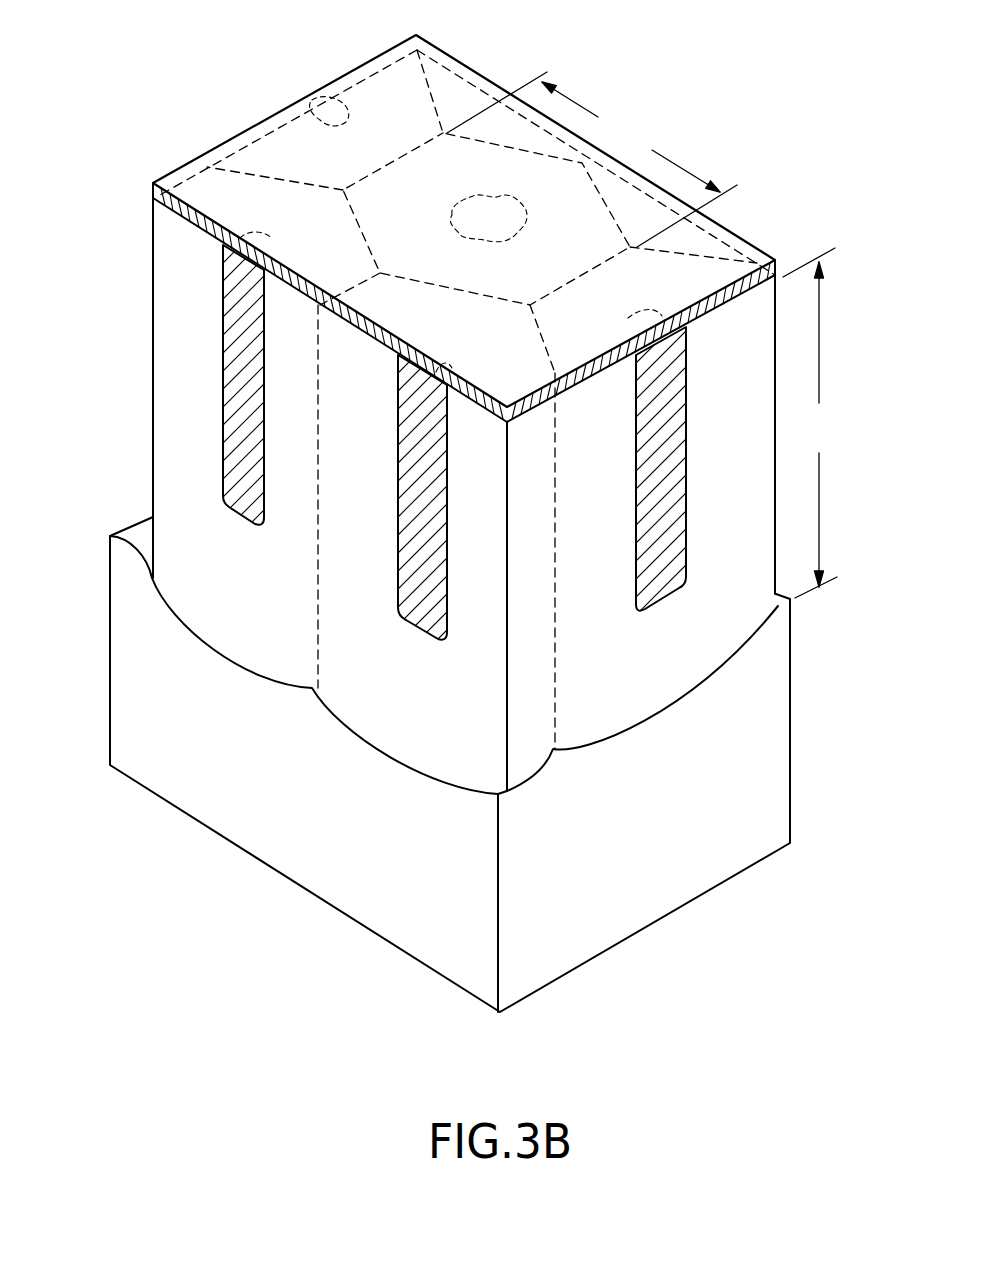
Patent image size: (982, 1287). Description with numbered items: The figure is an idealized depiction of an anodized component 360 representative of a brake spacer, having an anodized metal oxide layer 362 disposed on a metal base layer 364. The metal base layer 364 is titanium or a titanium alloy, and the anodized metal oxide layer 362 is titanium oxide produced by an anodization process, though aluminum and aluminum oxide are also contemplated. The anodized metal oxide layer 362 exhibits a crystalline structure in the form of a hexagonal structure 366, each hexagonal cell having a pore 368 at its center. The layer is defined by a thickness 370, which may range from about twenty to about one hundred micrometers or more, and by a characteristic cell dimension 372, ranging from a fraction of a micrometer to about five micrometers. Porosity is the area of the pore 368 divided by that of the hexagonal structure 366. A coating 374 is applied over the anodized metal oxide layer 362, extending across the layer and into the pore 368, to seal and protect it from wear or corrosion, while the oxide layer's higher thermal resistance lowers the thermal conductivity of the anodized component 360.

The anodized component 360 is at (147, 127).
The anodized metal oxide layer 362 is at (172, 322).
The metal base layer 364 is at (127, 681).
The hexagonal structure 366 is at (407, 167).
The pore 368 is at (482, 212).
The thickness 370 is at (810, 423).
The characteristic cell dimension 372 is at (592, 159).
The coating 374 is at (190, 195).